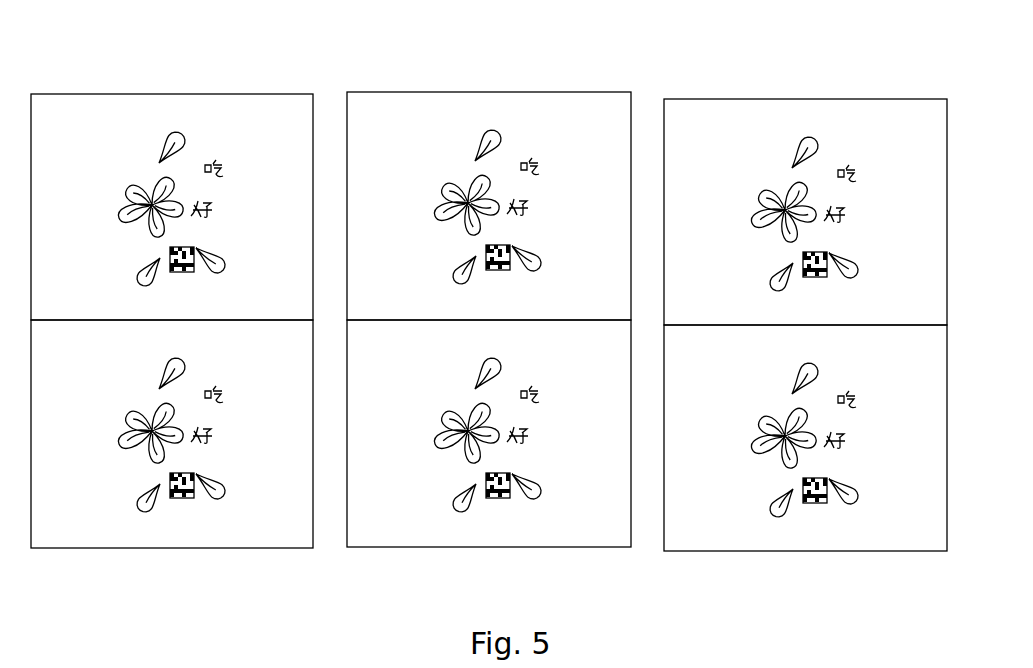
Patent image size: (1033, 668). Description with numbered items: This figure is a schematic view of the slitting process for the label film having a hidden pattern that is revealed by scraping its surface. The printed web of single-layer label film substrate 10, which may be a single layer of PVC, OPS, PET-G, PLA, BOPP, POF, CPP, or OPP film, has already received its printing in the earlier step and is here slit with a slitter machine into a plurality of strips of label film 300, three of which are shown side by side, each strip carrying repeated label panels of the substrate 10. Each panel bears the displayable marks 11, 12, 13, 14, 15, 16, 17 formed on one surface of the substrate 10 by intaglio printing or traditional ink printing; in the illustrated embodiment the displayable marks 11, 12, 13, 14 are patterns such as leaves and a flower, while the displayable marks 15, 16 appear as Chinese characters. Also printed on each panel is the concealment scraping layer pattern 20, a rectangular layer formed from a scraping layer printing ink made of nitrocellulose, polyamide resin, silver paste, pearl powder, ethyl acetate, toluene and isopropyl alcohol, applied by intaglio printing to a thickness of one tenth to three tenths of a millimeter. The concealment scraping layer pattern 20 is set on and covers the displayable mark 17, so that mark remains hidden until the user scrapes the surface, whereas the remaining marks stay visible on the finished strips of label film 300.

The strips of label film 300 is at (536, 45).
The single-layer label film substrate 10 is at (489, 336).
The displayable mark 11 is at (440, 262).
The displayable mark 12 is at (433, 322).
The displayable mark 13 is at (425, 397).
The displayable mark 14 is at (550, 354).
The displayable mark 15 is at (570, 224).
The displayable mark 16 is at (553, 303).
The displayable mark 17 is at (531, 406).
The concealment scraping layer pattern 20 is at (491, 396).